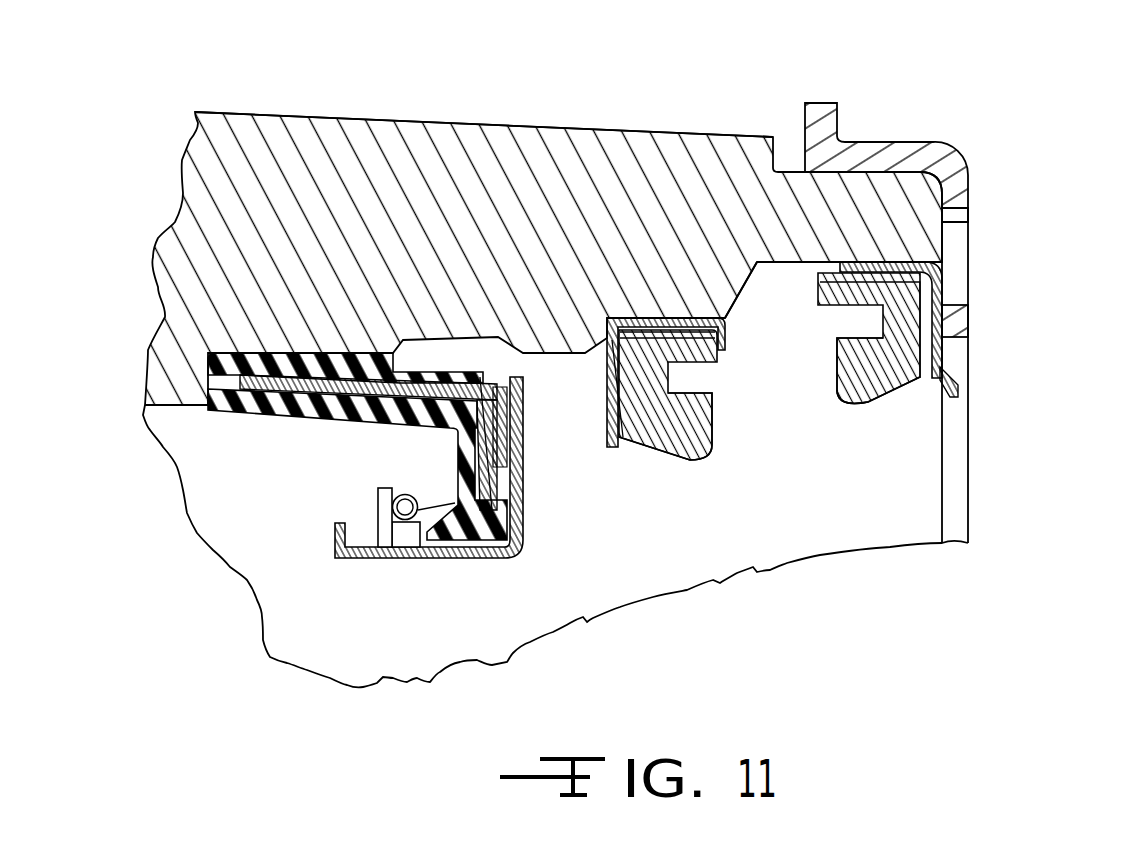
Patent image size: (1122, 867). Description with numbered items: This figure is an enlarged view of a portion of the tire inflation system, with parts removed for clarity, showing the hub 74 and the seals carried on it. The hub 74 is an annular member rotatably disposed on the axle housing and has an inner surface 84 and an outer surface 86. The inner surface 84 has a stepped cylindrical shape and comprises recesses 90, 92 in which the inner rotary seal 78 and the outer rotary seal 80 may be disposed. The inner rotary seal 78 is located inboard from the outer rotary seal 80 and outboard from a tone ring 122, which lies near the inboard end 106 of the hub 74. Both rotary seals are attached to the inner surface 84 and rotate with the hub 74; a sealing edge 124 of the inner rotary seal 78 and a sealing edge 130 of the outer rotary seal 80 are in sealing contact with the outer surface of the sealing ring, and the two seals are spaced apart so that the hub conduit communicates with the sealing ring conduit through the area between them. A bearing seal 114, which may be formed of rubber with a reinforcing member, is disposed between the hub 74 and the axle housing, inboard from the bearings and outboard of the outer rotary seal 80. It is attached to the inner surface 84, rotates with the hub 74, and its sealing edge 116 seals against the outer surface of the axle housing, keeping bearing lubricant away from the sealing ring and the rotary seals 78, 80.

The hub 74 is at (508, 145).
The outer surface 86 is at (285, 113).
The recess 90 is at (780, 258).
The inner surface 84 is at (562, 355).
The recess 92 is at (632, 320).
The sealing edge 130 is at (652, 445).
The inner rotary seal 78 is at (840, 307).
The outer rotary seal 80 is at (712, 423).
The sealing edge 124 is at (872, 400).
The tone ring 122 is at (970, 170).
The inboard end 106 is at (970, 207).
The bearing seal 114 is at (365, 443).
The sealing edge 116 is at (425, 558).